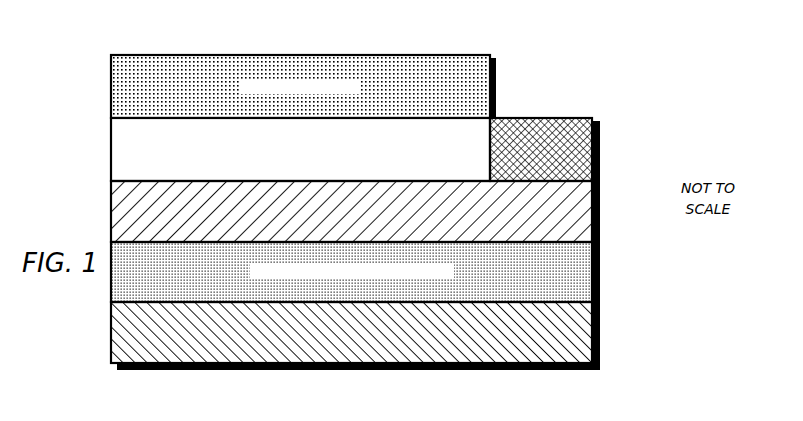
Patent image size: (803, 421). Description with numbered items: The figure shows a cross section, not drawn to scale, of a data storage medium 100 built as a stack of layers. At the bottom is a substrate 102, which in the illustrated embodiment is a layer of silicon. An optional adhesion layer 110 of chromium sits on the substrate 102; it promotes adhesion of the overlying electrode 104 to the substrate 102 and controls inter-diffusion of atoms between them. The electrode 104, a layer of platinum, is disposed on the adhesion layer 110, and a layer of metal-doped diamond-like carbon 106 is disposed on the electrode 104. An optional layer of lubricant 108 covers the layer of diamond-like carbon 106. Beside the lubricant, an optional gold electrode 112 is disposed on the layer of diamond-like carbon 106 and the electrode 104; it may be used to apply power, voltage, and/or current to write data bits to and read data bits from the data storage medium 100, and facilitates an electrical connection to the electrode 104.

The data storage medium 100 is at (354, 220).
The substrate 102 is at (600, 316).
The electrode 104 is at (600, 194).
The layer of diamond-like carbon 106 is at (111, 157).
The layer of lubricant 108 is at (497, 75).
The adhesion layer 110 is at (600, 258).
The electrode 112 is at (600, 133).